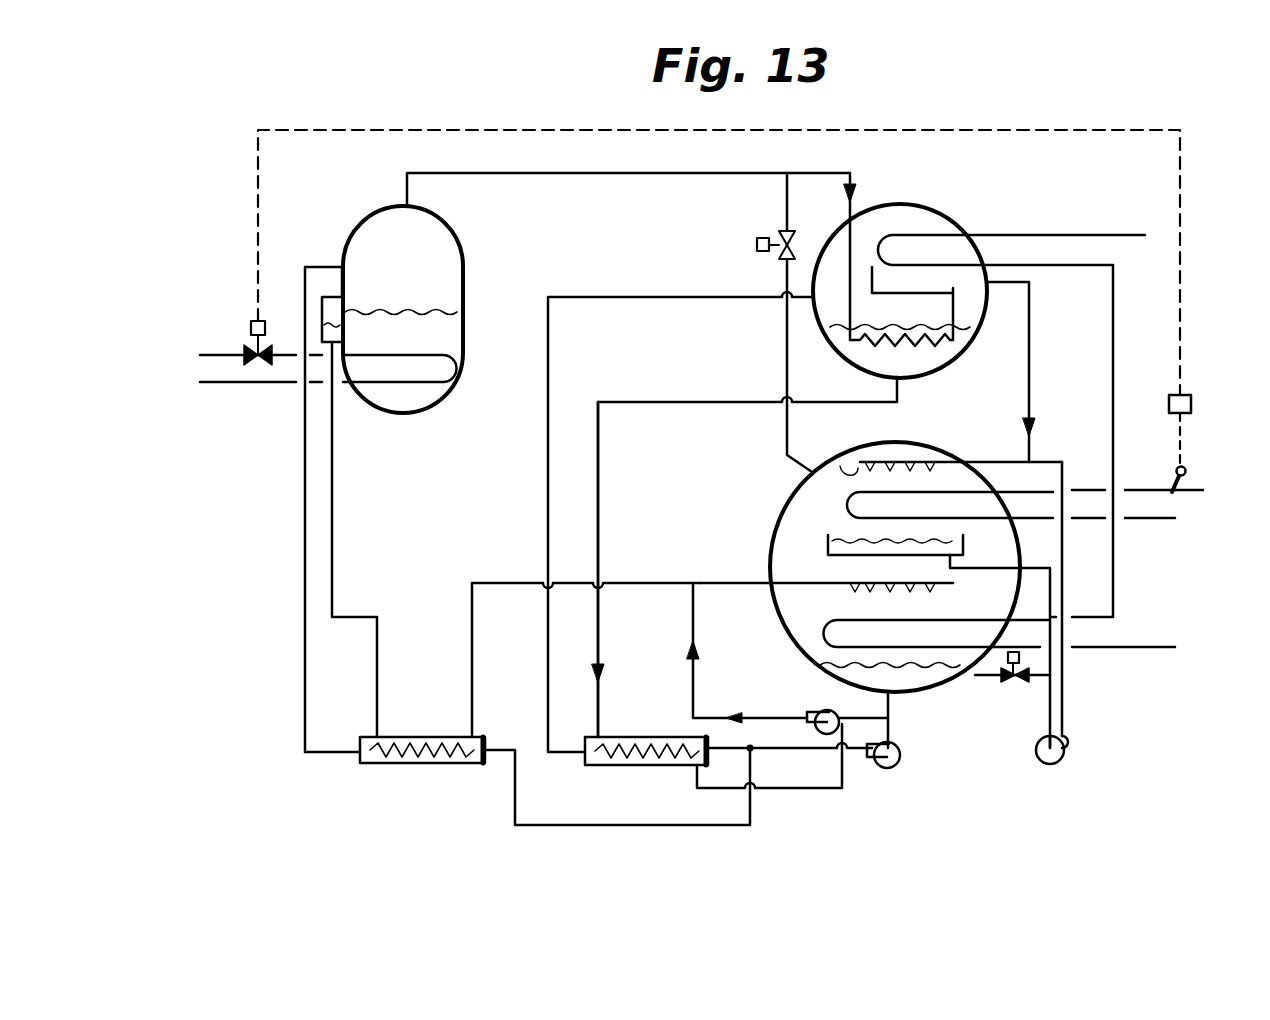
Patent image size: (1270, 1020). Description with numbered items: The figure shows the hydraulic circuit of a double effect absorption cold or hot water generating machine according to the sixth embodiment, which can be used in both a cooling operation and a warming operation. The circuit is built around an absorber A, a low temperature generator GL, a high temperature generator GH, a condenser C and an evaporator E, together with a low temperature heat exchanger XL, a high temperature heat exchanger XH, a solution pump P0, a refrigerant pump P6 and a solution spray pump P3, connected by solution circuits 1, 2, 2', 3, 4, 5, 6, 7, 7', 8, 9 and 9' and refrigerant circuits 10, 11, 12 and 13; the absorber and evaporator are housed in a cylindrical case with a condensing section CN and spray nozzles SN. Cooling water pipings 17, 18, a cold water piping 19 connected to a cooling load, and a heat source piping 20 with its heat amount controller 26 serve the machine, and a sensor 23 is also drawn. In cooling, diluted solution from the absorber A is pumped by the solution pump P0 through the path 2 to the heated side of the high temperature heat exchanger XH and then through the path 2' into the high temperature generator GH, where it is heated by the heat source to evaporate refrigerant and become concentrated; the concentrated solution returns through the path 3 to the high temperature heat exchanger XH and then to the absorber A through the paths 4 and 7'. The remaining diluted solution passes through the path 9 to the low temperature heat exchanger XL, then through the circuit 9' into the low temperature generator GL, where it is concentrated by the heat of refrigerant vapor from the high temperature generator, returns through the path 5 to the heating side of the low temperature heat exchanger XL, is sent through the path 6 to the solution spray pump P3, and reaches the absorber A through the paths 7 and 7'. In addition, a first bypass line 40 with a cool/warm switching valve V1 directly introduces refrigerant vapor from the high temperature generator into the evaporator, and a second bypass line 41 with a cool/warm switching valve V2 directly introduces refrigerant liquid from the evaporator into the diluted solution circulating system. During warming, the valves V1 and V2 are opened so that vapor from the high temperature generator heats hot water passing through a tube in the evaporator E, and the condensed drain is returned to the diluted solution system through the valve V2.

The solution circuit 1 is at (888, 755).
The solution circuit 2 is at (617, 786).
The solution circuit 2' is at (309, 693).
The solution circuit 3 is at (333, 518).
The solution circuit 4 is at (644, 584).
The solution circuit 5 is at (599, 480).
The solution circuit 6 is at (808, 788).
The solution circuit 7 is at (747, 653).
The solution circuit 7' is at (826, 564).
The solution circuit 8 is at (801, 709).
The solution circuit 9 is at (763, 724).
The solution circuit 9' is at (680, 522).
The refrigerant circuit 10 is at (1049, 712).
The refrigerant circuit 11 is at (1088, 630).
The refrigerant circuit 12 is at (1031, 360).
The refrigerant circuit 13 is at (668, 172).
The cooling water piping 17 is at (1150, 648).
The cooling water piping 18 is at (1006, 235).
The cold water piping 19 is at (1148, 522).
The heat source 20 is at (236, 393).
The sensor 23 is at (1178, 493).
The heat amount controller 26 is at (255, 322).
The first bypass line 40 is at (786, 356).
The second bypass line 41 is at (1040, 686).
The high temperature generator GH is at (363, 223).
The condenser C is at (911, 288).
The low temperature generator GL is at (961, 353).
The evaporator E is at (971, 553).
The condenser section CN is at (843, 466).
The spray nozzle SN is at (849, 585).
The absorber A is at (816, 675).
The cool/warm switching valve V1 is at (756, 245).
The cool/warm switching valve V2 is at (1020, 657).
The solution spray pump P3 is at (805, 738).
The solution pump P0 is at (889, 768).
The refrigerant pump P6 is at (1065, 753).
The high temperature heat exchanger XH is at (412, 768).
The low temperature heat exchanger XL is at (665, 768).